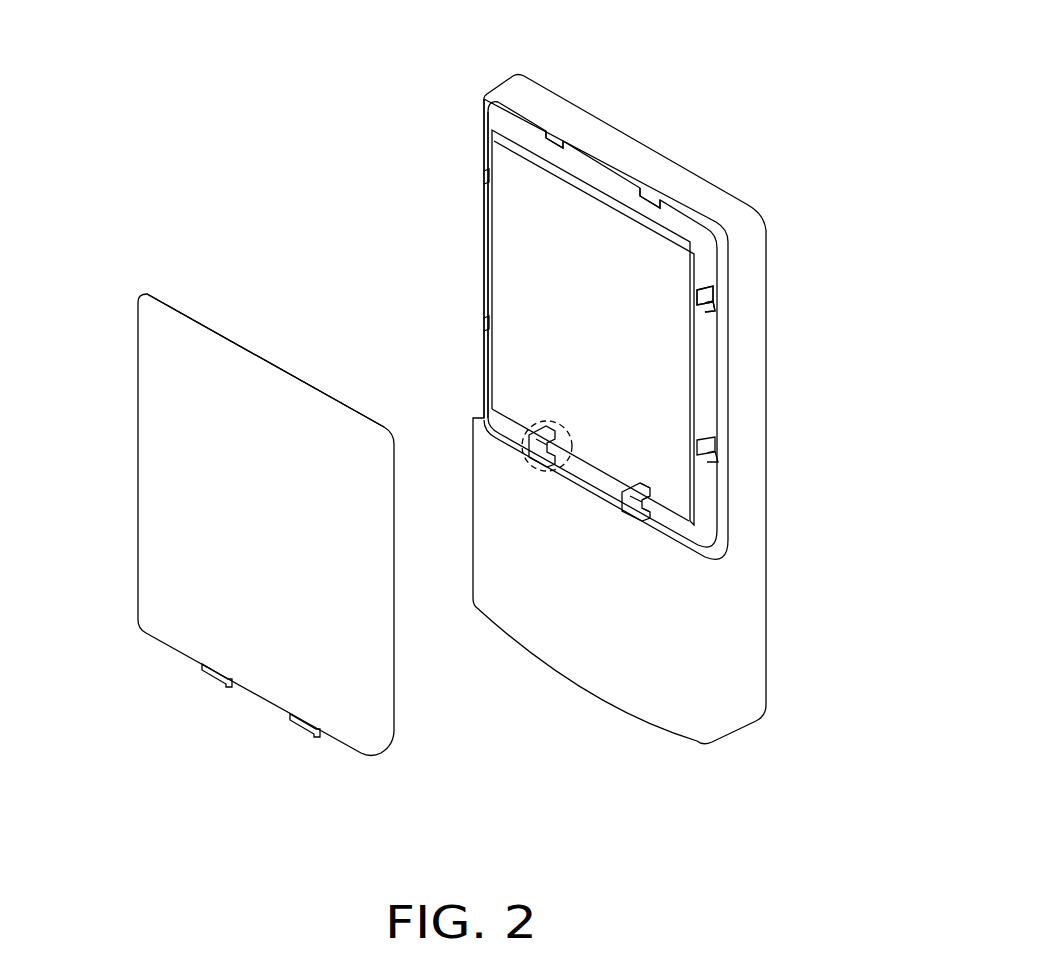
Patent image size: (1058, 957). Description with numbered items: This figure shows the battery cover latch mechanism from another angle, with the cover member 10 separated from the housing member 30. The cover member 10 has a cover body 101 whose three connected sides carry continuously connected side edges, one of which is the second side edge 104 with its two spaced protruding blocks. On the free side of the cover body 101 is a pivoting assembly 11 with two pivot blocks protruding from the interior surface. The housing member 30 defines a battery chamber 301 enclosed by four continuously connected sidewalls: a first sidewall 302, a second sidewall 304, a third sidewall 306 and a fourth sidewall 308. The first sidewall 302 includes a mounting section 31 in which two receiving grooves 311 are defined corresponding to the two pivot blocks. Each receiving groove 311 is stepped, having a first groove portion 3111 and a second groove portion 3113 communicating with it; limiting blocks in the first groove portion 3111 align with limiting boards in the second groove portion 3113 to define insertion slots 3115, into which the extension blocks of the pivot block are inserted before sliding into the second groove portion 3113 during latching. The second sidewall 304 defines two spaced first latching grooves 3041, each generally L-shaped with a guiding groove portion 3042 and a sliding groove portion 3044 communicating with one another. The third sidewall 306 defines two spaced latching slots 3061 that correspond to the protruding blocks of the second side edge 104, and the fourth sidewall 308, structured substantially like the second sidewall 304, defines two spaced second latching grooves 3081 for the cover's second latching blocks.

The cover member 10 is at (150, 282).
The cover body 101 is at (165, 468).
The second side edge 104 is at (260, 377).
The pivoting assembly 11 is at (212, 677).
The housing member 30 is at (492, 65).
The battery chamber 301 is at (655, 272).
The first sidewall 302 is at (521, 412).
The second sidewall 304 is at (718, 368).
The first latching groove 3041 is at (848, 262).
The guiding groove portion 3042 is at (713, 292).
The sliding groove portion 3044 is at (713, 306).
The third sidewall 306 is at (672, 218).
The latching slot 3061 is at (555, 137).
The fourth sidewall 308 is at (487, 137).
The second latching groove 3081 is at (486, 176).
The mounting section 31 is at (890, 500).
The receiving groove 311 is at (552, 482).
The first groove portion 3111 is at (648, 491).
The second groove portion 3113 is at (650, 503).
The insertion slot 3115 is at (650, 513).